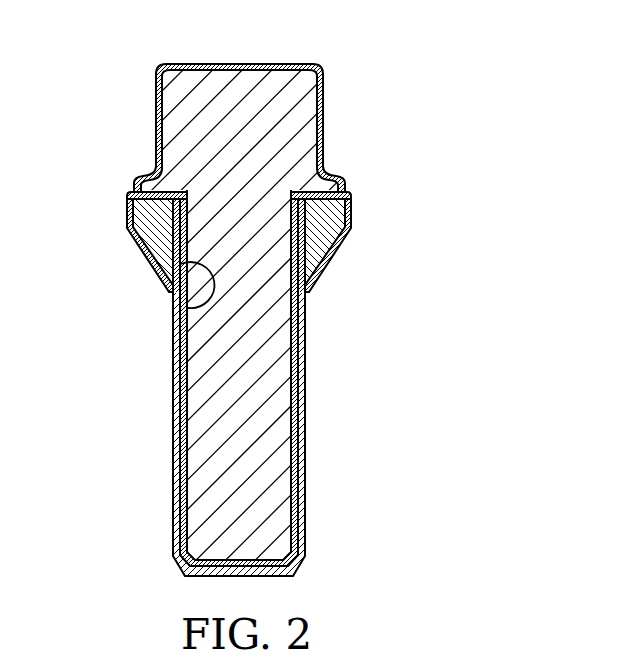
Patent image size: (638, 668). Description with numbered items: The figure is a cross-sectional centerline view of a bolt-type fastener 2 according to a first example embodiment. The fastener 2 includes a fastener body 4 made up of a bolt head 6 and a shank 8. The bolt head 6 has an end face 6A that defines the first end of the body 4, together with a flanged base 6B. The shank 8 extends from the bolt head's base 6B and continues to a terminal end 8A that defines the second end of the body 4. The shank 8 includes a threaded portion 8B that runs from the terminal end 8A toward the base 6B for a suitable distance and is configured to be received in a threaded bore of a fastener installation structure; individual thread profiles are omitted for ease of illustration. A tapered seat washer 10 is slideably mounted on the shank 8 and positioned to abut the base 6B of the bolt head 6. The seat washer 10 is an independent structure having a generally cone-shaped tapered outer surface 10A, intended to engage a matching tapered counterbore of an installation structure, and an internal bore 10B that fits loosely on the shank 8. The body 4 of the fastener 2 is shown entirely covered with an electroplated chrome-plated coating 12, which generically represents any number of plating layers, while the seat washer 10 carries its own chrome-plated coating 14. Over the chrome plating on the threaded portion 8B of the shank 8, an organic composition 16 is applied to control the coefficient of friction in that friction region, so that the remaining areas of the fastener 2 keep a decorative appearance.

The bolt-type fastener 2 is at (124, 53).
The fastener body 4 is at (459, 61).
The bolt head 6 is at (89, 63).
The end face 6A is at (283, 64).
The flanged base 6B is at (347, 195).
The shank 8 is at (84, 197).
The terminal end 8A is at (268, 576).
The threaded portion 8B is at (341, 302).
The tapered seat washer 10 is at (428, 198).
The tapered outer surface 10A is at (363, 228).
The internal bore 10B is at (188, 308).
The chrome-plated coating 12 is at (156, 125).
The chrome-plated coating 14 is at (153, 247).
The organic composition 16 is at (173, 458).